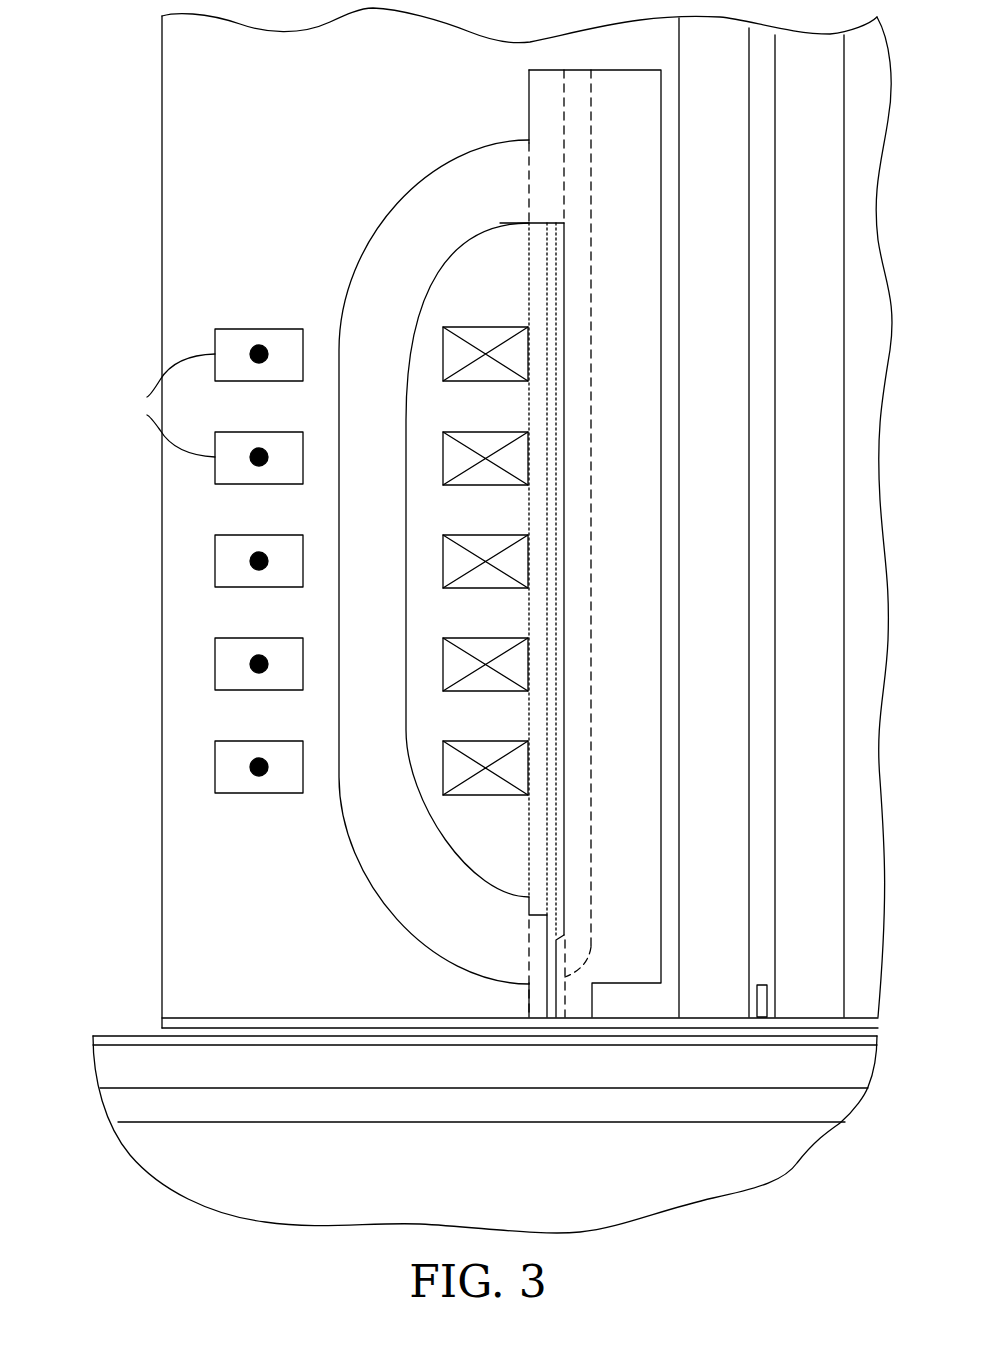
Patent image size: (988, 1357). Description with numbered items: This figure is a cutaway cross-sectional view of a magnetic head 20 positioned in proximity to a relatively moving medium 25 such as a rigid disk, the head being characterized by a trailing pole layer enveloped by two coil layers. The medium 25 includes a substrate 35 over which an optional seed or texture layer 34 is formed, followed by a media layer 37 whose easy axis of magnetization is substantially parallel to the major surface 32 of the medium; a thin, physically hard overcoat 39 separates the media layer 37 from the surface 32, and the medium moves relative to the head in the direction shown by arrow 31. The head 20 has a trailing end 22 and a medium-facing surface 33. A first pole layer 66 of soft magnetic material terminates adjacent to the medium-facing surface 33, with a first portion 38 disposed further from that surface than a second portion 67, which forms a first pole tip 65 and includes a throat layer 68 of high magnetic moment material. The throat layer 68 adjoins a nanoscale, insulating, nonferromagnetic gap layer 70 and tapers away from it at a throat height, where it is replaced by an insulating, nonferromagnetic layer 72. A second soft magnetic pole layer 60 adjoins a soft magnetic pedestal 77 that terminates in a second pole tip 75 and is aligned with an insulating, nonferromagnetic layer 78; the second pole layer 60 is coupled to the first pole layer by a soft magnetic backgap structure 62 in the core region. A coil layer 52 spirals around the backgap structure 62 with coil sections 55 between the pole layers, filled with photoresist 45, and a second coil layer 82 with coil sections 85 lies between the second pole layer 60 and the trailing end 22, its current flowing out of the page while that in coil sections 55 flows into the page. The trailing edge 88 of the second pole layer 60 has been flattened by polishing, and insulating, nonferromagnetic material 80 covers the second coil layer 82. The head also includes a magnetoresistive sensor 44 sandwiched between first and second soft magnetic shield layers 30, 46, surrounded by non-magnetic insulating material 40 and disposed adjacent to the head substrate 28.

The magnetic head 20 is at (104, 56).
The trailing end 22 is at (152, 551).
The medium 25 is at (100, 1144).
The substrate 28 is at (868, 517).
The first soft magnetic shield layer 30 is at (799, 526).
The arrow 31 is at (223, 1140).
The major surface of the medium 32 is at (137, 1028).
The medium-facing surface 33 is at (285, 1036).
The seed or texture layer 34 is at (614, 1112).
The substrate 35 is at (493, 1170).
The media layer 37 is at (390, 1080).
The first portion of the first pole layer 38 is at (595, 543).
The overcoat 39 is at (722, 1046).
The non-magnetic, electrically insulating material 40 is at (768, 314).
The magnetoresistive sensor 44 is at (767, 1000).
The photoresist 45 is at (503, 509).
The second soft magnetic shield layer 46 is at (714, 517).
The coil layer 52 is at (494, 312).
The coil sections 55 is at (528, 450).
The second pole layer 60 is at (434, 562).
The backgap structure 62 is at (529, 103).
The first pole tip 65 is at (565, 1028).
The first pole layer 66 is at (662, 744).
The second portion of the first pole layer 67 is at (592, 996).
The throat layer 68 is at (598, 958).
The gap layer 70 is at (547, 948).
The electrically insulating, nonferromagnetic layer 72 is at (566, 862).
The second pole tip 75 is at (538, 1028).
The pedestal 77 is at (529, 990).
The electrically insulating, nonferromagnetic layer 78 is at (529, 843).
The electrically insulating, nonferromagnetic material 80 is at (238, 517).
The second coil layer 82 is at (258, 312).
The coil sections 85 is at (162, 405).
The trailing edge 88 is at (330, 510).